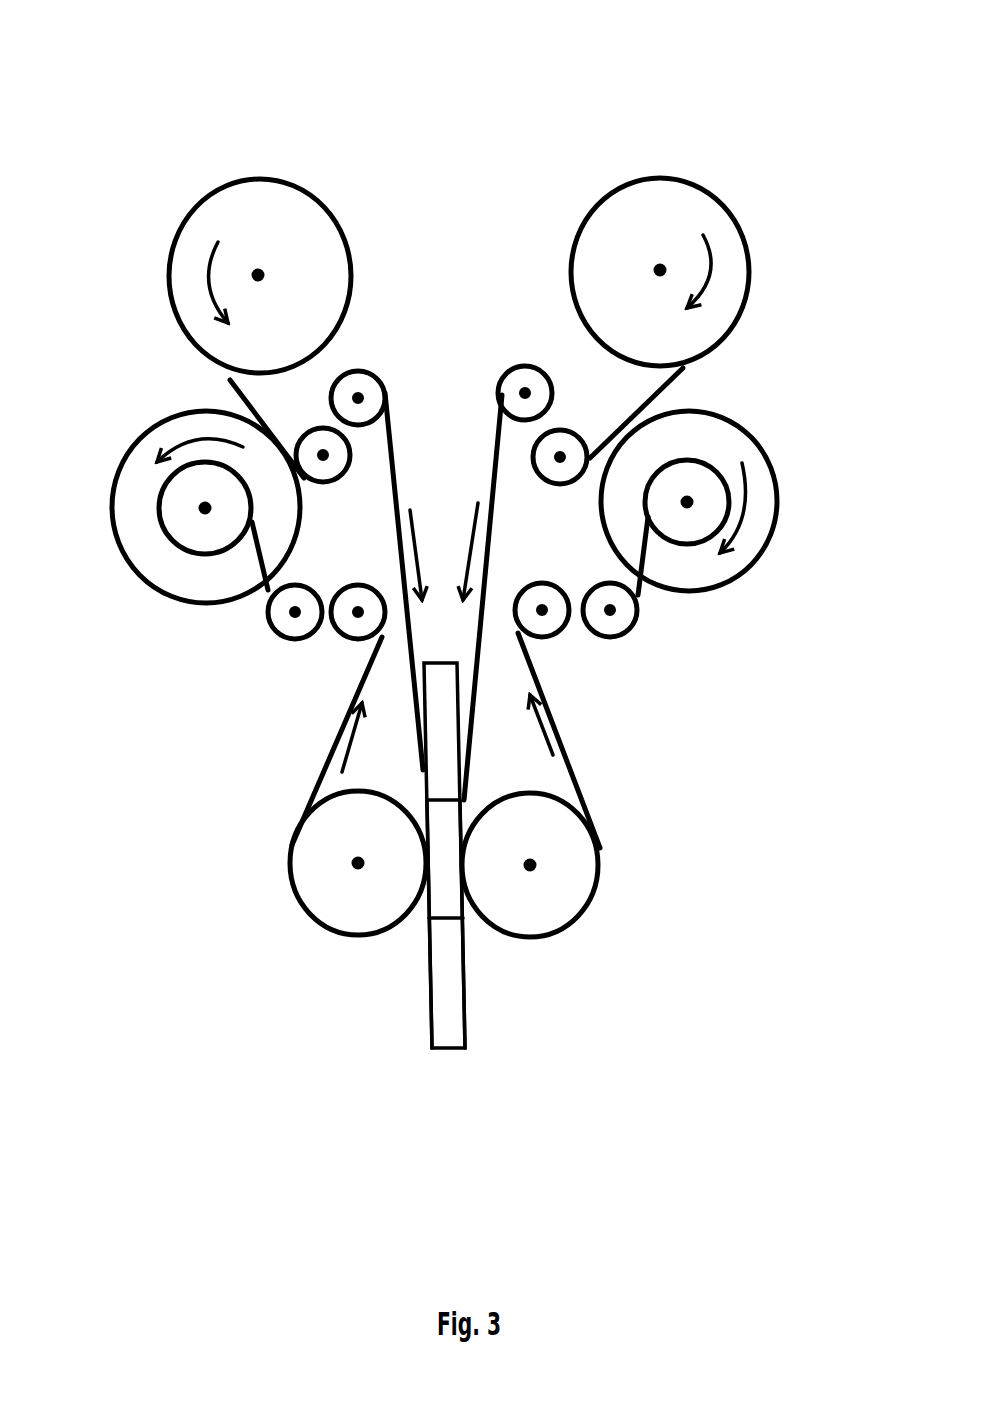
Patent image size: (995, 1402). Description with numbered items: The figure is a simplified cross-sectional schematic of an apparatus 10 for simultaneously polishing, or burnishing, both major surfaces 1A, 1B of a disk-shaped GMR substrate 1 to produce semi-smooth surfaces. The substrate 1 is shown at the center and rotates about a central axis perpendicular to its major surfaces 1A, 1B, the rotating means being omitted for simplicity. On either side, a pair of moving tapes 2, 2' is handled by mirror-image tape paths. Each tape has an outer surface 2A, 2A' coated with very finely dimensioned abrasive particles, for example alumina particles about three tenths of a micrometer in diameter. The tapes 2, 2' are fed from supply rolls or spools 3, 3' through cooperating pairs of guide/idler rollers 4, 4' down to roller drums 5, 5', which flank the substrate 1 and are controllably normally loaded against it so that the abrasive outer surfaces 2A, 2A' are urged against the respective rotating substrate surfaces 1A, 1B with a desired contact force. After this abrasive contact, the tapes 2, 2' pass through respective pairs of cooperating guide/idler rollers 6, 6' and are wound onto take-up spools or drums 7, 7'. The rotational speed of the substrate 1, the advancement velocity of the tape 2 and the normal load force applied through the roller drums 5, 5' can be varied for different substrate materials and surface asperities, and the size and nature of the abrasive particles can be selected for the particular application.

The apparatus 10 is at (160, 166).
The supply roll 3 is at (267, 244).
The supply roll 3' is at (671, 239).
The guide/idler rollers 4 is at (348, 355).
The guide/idler rollers 4' is at (542, 347).
The moving tape 2 is at (176, 434).
The moving tape 2' is at (740, 458).
The outer surface of tape 2A is at (309, 581).
The outer surface of tape 2A' is at (602, 563).
The take-up spool 7 is at (181, 555).
The take-up spool 7' is at (716, 546).
The guide/idler rollers 6 is at (262, 664).
The guide/idler rollers 6' is at (631, 646).
The roller drum 5 is at (294, 863).
The roller drum 5' is at (594, 865).
The substrate 1 is at (450, 1055).
The major surface 1A is at (428, 1010).
The major surface 1B is at (465, 1000).